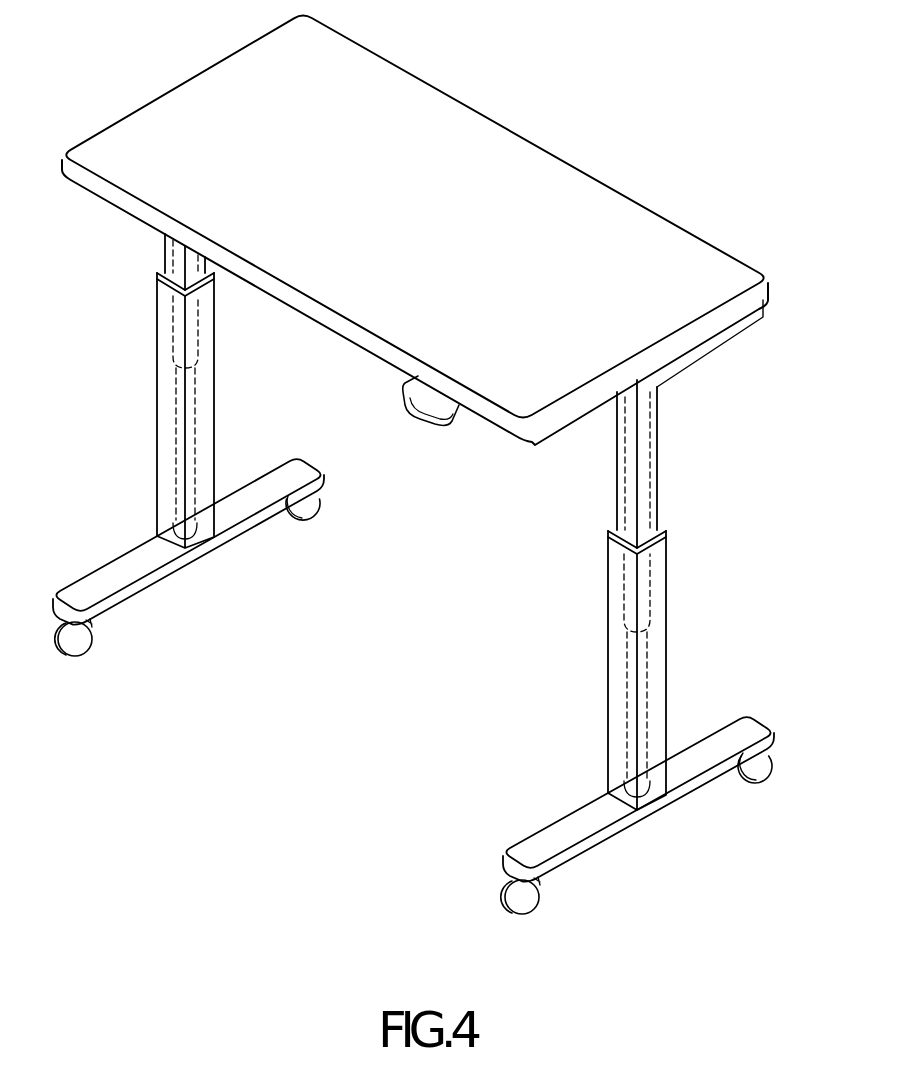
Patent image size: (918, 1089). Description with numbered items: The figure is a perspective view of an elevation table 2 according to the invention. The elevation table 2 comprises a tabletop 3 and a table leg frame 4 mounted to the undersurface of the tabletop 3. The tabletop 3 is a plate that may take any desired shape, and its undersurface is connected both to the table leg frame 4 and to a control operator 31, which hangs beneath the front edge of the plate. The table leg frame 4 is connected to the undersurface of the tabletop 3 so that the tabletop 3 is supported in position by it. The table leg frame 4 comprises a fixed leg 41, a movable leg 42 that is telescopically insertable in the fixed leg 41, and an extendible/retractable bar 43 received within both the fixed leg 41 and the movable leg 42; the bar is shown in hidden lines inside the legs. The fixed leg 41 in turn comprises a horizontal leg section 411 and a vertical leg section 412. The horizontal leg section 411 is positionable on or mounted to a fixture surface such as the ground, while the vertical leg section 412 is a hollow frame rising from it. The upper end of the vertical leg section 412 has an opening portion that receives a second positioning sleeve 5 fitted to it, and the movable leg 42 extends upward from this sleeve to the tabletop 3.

The elevation table 2 is at (417, 459).
The tabletop 3 is at (415, 257).
The control operator 31 is at (432, 409).
The table leg frame 4 is at (417, 575).
The fixed leg 41 is at (408, 594).
The horizontal leg section 411 is at (148, 578).
The vertical leg section 412 is at (160, 420).
The movable leg 42 is at (168, 252).
The extendible/retractable bar 43 is at (178, 328).
The second positioning sleeve 5 is at (611, 531).